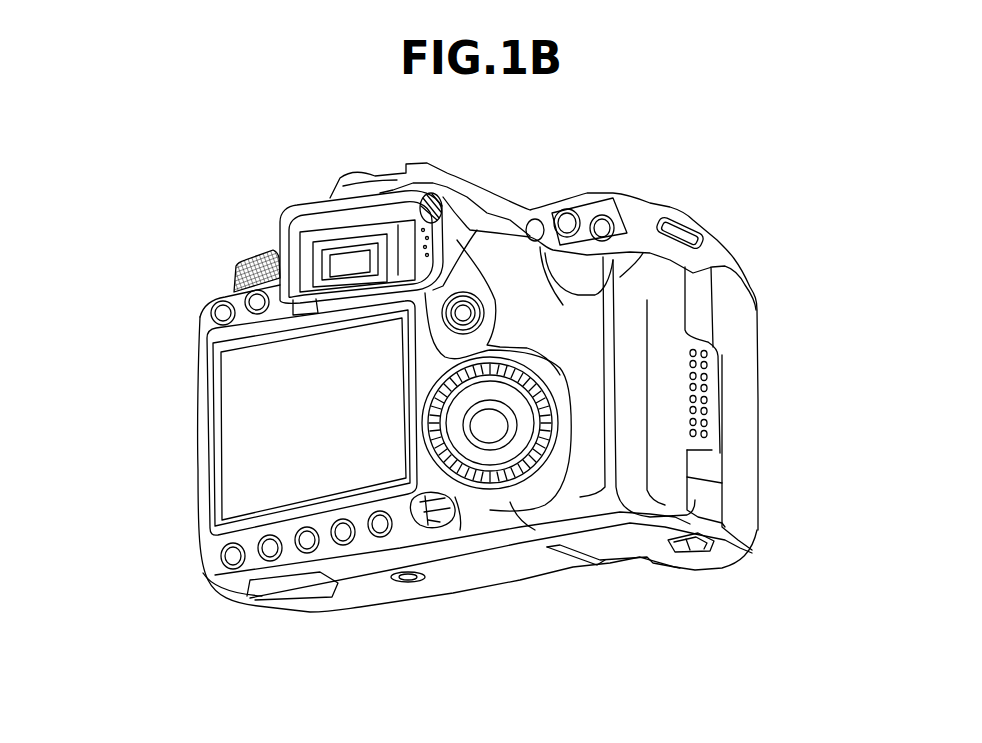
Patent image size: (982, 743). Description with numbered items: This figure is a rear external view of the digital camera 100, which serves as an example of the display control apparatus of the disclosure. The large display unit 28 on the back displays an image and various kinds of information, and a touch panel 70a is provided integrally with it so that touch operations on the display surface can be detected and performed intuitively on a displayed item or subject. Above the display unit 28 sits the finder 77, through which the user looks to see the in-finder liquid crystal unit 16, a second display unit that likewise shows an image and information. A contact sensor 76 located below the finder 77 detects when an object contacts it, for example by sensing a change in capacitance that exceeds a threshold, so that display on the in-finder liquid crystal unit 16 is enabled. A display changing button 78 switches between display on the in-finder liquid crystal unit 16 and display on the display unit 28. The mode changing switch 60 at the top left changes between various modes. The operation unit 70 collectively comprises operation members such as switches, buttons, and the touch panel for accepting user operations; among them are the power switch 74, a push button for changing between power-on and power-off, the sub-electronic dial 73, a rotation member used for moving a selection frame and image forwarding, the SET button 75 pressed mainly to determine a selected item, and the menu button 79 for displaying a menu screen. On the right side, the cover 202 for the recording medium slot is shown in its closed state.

The digital camera 100 is at (729, 203).
The cover 202 is at (735, 312).
The mode changing switch 60 is at (236, 262).
The in-finder liquid crystal unit 16 is at (320, 235).
The finder 77 is at (357, 267).
The contact sensor 76 is at (367, 247).
The display changing button 78 is at (462, 292).
The display unit 28 is at (250, 418).
The touch panel 70a is at (240, 410).
The operation unit 70 is at (494, 488).
The menu button 79 is at (370, 538).
The power switch 74 is at (433, 528).
The sub-electronic dial 73 is at (467, 490).
The SET button 75 is at (488, 425).